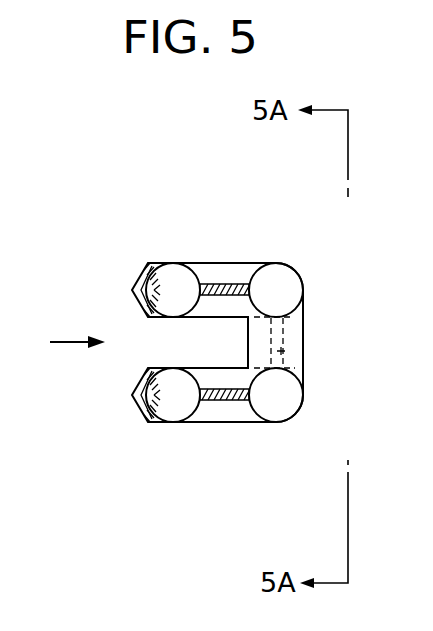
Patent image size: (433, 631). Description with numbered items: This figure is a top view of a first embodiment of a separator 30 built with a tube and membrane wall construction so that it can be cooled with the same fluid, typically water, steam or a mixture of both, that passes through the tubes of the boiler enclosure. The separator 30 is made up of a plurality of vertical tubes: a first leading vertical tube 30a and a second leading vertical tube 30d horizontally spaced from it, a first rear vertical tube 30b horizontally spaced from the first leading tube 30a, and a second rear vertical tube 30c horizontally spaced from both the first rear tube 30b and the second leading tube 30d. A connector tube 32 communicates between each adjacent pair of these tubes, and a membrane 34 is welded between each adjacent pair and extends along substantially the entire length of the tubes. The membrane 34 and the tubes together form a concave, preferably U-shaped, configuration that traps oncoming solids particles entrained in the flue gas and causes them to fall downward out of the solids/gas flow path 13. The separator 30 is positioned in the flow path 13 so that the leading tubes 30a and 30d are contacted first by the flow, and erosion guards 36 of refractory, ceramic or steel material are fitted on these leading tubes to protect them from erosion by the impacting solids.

The solids/gas flow path 13 is at (68, 342).
The separator 30 is at (131, 216).
The first leading vertical tube 30a is at (171, 262).
The first rear vertical tube 30b is at (301, 262).
The second rear vertical tube 30c is at (290, 414).
The second leading vertical tube 30d is at (175, 423).
The connector tube 32 is at (252, 268).
The membrane 34 is at (227, 284).
The erosion guard 36 is at (137, 398).